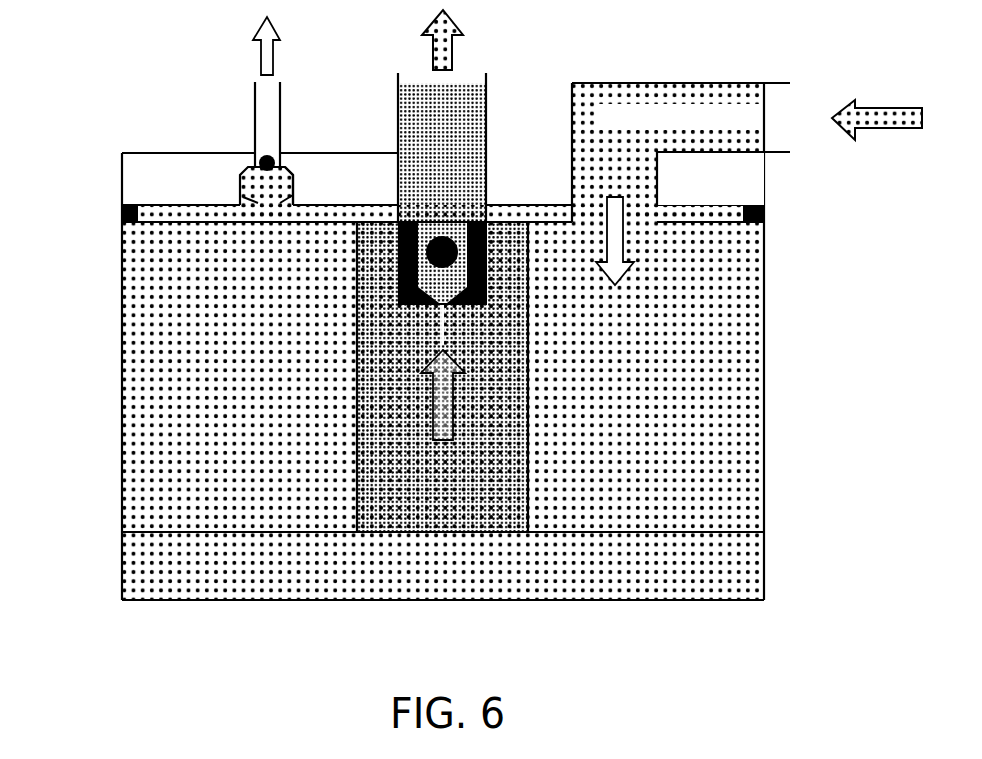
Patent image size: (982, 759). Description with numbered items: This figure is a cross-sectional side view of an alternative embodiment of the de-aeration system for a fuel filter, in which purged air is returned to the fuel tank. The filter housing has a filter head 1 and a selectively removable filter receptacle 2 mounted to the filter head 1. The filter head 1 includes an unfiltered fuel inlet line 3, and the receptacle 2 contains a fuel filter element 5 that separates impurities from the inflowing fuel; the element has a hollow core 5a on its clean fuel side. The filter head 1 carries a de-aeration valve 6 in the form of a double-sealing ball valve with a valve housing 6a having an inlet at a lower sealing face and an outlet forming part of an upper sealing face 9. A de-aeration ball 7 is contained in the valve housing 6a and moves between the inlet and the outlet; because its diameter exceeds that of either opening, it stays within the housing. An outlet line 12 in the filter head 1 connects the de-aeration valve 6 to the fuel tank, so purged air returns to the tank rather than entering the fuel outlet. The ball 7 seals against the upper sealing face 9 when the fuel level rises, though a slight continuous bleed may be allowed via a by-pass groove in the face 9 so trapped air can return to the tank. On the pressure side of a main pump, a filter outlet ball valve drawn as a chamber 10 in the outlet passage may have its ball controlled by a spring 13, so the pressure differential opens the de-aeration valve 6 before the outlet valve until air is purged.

The filter head 1 is at (737, 172).
The filter receptacle 2 is at (764, 415).
The unfiltered fuel inlet line 3 is at (790, 105).
The fuel filter element 5 is at (742, 572).
The hollow core 5a is at (420, 517).
The de-aeration valve 6 is at (243, 197).
The valve housing 6a is at (295, 170).
The de-aeration ball 7 is at (257, 200).
The upper sealing face 9 is at (268, 158).
The ball chamber 10 is at (470, 224).
The outlet line 12 is at (255, 97).
The spring 13 is at (422, 218).